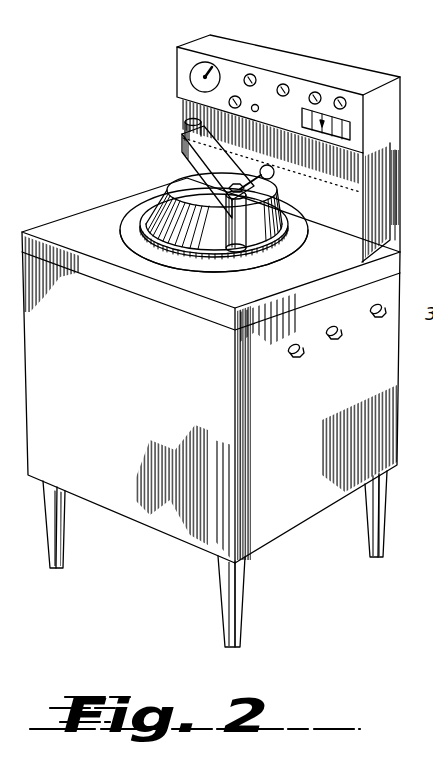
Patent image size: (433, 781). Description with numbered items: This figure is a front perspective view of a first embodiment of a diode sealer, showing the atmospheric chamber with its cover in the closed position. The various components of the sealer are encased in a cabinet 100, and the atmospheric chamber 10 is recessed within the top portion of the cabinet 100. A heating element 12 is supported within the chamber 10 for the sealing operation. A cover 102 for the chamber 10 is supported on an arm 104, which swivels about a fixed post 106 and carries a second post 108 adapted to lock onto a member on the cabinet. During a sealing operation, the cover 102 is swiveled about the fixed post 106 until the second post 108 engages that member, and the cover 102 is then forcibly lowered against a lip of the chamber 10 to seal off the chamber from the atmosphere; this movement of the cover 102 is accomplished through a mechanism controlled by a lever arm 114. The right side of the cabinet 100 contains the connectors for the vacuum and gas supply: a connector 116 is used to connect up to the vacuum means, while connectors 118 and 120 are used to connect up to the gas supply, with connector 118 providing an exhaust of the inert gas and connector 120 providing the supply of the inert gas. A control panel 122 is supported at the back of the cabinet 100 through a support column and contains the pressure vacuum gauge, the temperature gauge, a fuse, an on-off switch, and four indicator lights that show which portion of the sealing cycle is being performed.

The atmospheric chamber 10 is at (140, 232).
The heating element 12 is at (401, 180).
The cabinet 100 is at (155, 403).
The cover 102 is at (144, 203).
The arm 104 is at (204, 155).
The fixed post 106 is at (286, 206).
The second post 108 is at (184, 132).
The lever arm 114 is at (275, 172).
The connector 116 is at (296, 360).
The connector 118 is at (335, 341).
The connector 120 is at (376, 319).
The control panel 122 is at (277, 57).